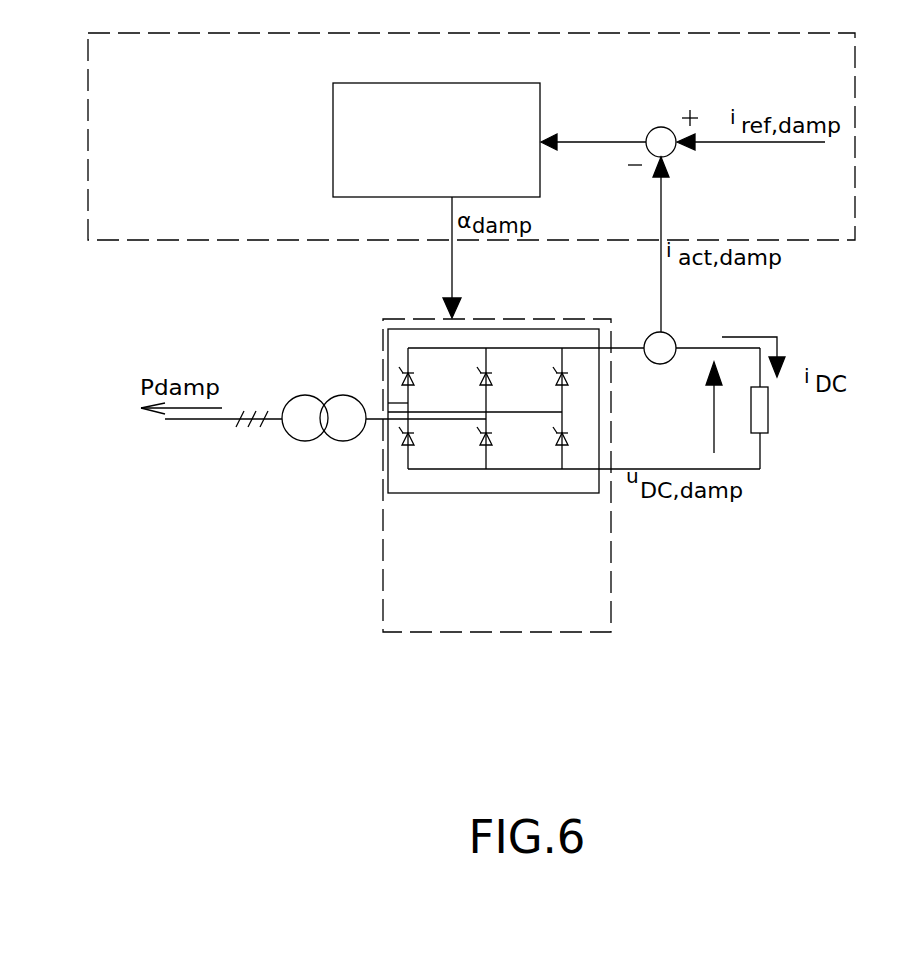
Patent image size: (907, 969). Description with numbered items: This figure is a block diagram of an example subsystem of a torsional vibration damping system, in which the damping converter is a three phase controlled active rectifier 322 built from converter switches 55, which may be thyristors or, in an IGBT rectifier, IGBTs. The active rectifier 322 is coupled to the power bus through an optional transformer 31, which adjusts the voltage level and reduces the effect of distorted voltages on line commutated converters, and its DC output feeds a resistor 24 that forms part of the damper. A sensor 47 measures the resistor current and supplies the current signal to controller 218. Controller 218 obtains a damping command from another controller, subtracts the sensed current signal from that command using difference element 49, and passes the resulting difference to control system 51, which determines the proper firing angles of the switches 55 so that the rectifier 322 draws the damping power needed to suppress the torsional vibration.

The controller 218 is at (265, 84).
The control system 51 is at (333, 140).
The difference element 49 is at (661, 126).
The sensor 47 is at (672, 334).
The resistor 24 is at (768, 413).
The transformer 31 is at (325, 438).
The converter switches 55 is at (565, 440).
The active rectifier 322 is at (563, 475).